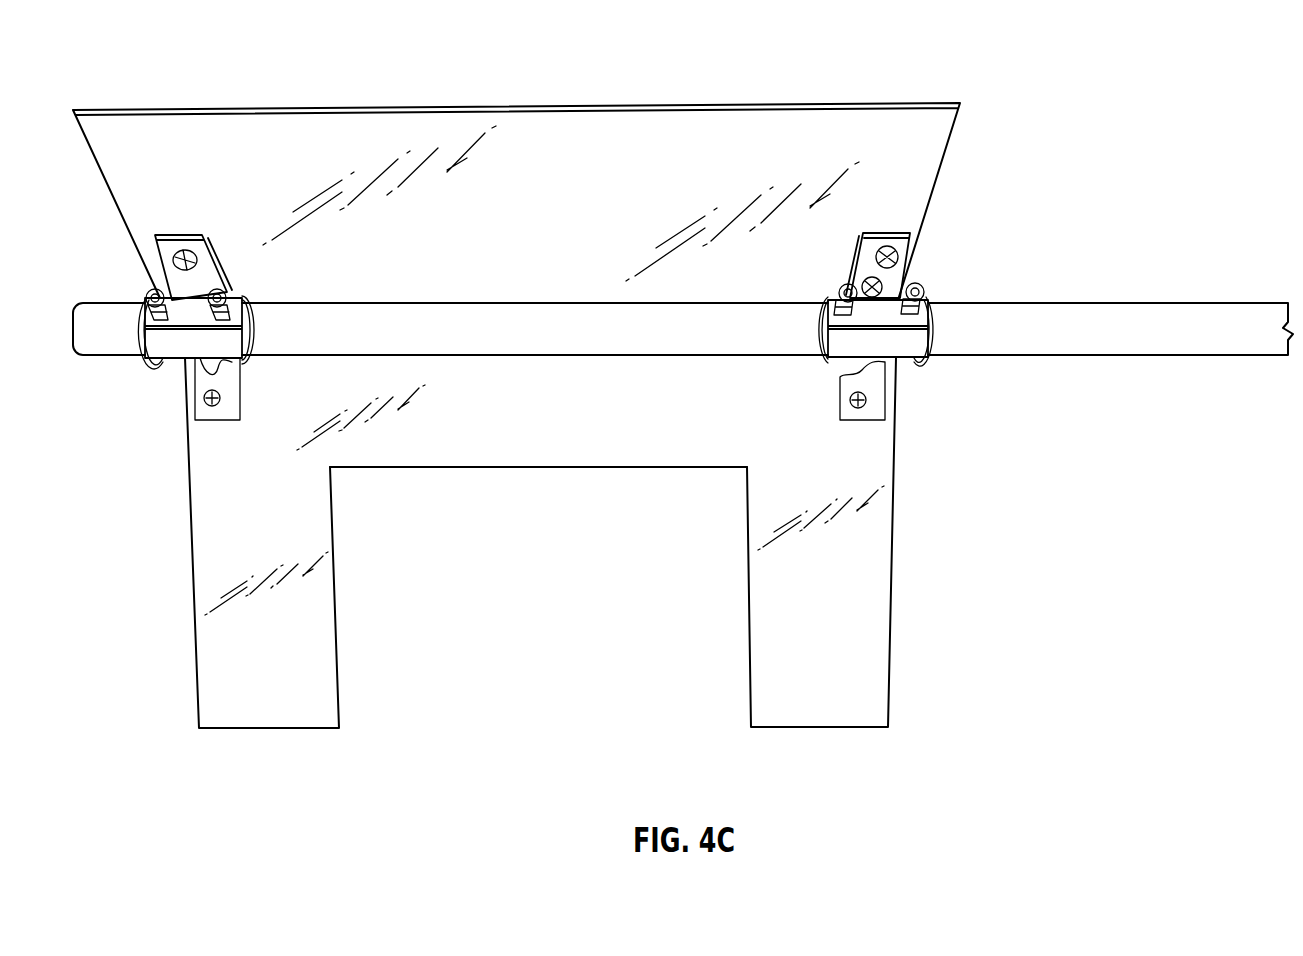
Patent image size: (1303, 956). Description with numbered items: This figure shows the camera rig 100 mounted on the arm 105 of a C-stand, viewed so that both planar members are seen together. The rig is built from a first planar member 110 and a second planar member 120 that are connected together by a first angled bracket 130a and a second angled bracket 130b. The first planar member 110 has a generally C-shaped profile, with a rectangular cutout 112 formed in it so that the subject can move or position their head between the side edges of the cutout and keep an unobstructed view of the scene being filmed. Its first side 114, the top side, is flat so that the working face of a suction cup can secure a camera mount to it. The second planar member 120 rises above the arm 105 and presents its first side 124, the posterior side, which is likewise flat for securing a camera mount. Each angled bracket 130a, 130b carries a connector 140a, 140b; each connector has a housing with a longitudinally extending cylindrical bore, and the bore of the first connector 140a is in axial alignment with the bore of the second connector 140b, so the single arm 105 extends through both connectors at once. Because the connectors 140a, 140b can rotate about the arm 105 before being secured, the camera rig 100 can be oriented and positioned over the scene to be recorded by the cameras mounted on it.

The camera rig 100 is at (552, 543).
The arm 105 is at (1070, 313).
The first planar member 110 is at (200, 492).
The rectangular cutout 112 is at (558, 613).
The first side 114 is at (857, 651).
The second planar member 120 is at (112, 149).
The first side 124 is at (569, 130).
The first angled bracket 130a is at (190, 282).
The second angled bracket 130b is at (893, 273).
The first connector 140a is at (180, 345).
The second connector 140b is at (903, 345).